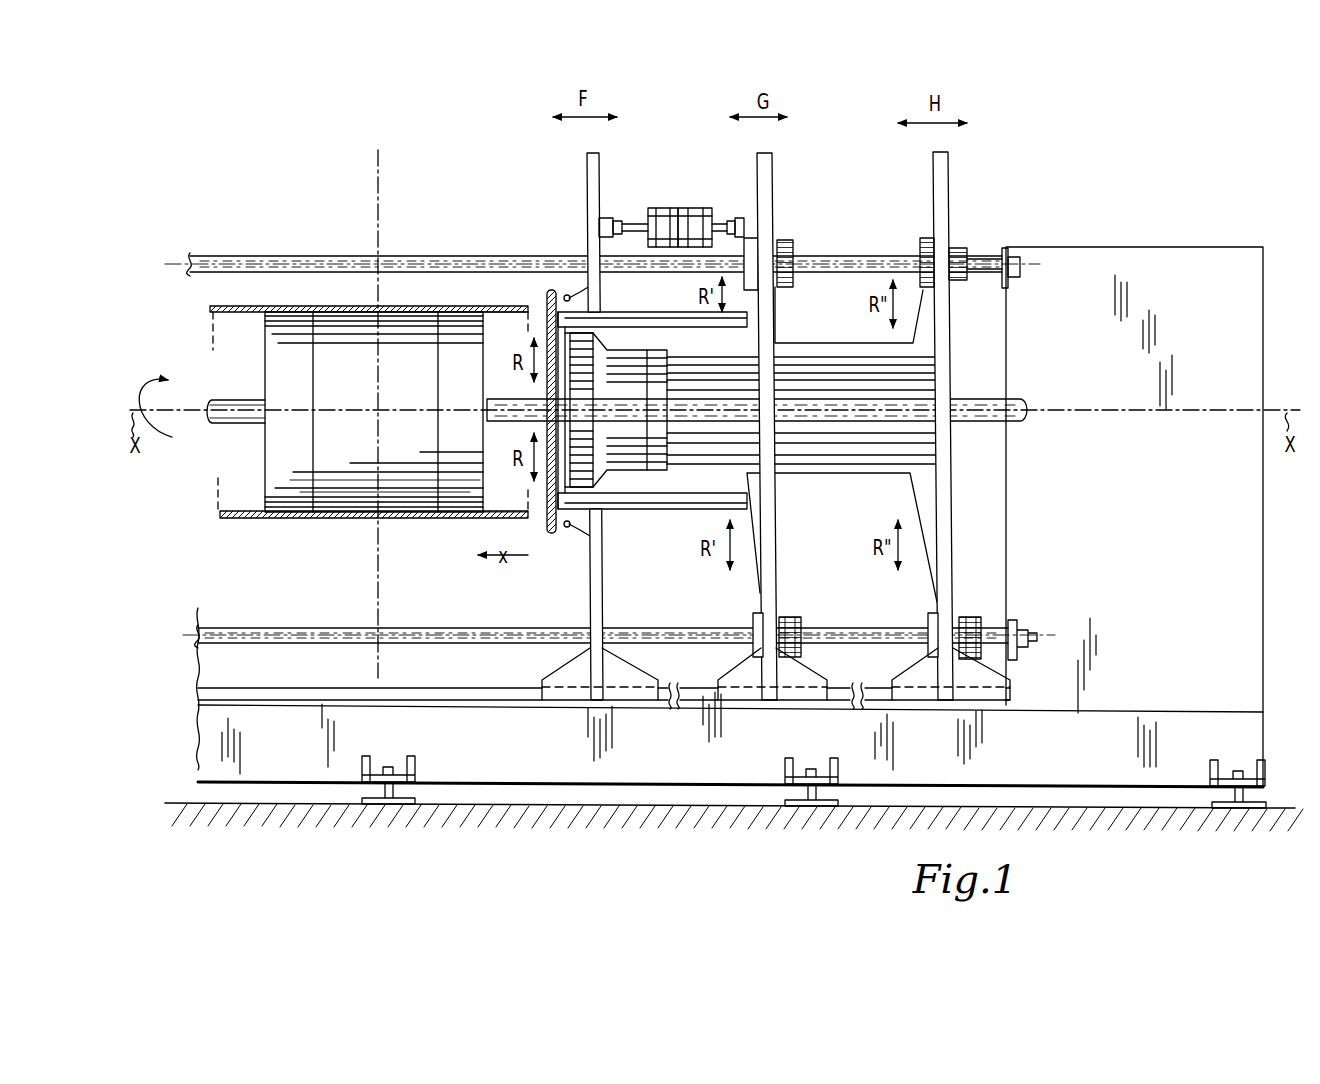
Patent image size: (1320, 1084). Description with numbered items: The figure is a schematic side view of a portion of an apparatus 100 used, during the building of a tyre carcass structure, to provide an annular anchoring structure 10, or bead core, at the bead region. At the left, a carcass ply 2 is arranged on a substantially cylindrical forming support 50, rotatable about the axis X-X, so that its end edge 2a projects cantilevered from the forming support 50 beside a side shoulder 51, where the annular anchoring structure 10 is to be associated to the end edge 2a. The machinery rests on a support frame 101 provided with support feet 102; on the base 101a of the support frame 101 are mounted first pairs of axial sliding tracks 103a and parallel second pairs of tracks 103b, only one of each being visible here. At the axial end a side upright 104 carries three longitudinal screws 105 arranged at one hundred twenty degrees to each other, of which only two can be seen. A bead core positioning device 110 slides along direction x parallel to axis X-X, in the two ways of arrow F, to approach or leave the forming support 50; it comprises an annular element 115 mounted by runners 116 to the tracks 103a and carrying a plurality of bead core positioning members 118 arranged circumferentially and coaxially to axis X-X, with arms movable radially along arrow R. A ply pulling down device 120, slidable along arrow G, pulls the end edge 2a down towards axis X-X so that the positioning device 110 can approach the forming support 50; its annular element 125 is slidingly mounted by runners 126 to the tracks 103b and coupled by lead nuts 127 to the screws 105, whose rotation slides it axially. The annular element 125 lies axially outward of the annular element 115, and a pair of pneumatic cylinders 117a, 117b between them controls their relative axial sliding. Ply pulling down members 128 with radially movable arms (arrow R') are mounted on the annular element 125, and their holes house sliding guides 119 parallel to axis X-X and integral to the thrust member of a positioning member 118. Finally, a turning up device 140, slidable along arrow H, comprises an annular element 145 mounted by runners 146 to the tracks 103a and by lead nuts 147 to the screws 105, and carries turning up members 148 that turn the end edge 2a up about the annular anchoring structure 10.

The carcass ply 2 is at (416, 306).
The end edges of the carcass ply 2a is at (232, 306).
The annular anchoring structure 10 is at (500, 341).
The forming support 50 is at (343, 478).
The side shoulder of the forming support 51 is at (265, 352).
The apparatus 100 is at (183, 224).
The support frame 101 is at (178, 738).
The base of the support frame 101a is at (590, 778).
The support feet 102 is at (376, 800).
The axial sliding tracks 103a is at (472, 690).
The sliding tracks 103b is at (694, 694).
The side upright 104 is at (1130, 260).
The longitudinal screws 105 is at (392, 256).
The bead core positioning device 110 is at (596, 433).
The annular element 115 is at (592, 190).
The runners 116 is at (570, 681).
The pneumatic cylinder 117a is at (670, 223).
The pneumatic cylinder 117b is at (695, 208).
The bead core positioning members 118 is at (571, 550).
The sliding guides 119 is at (648, 320).
The ply pulling down device 120 is at (783, 421).
The annular element 125 is at (760, 207).
The runners 126 is at (800, 680).
The lead nuts 127 is at (790, 285).
The ply pulling down members 128 is at (732, 512).
The turning up device 140 is at (969, 438).
The annular element 145 is at (950, 212).
The runners 146 is at (972, 681).
The lead nuts 147 is at (925, 243).
The turning up members 148 is at (898, 495).